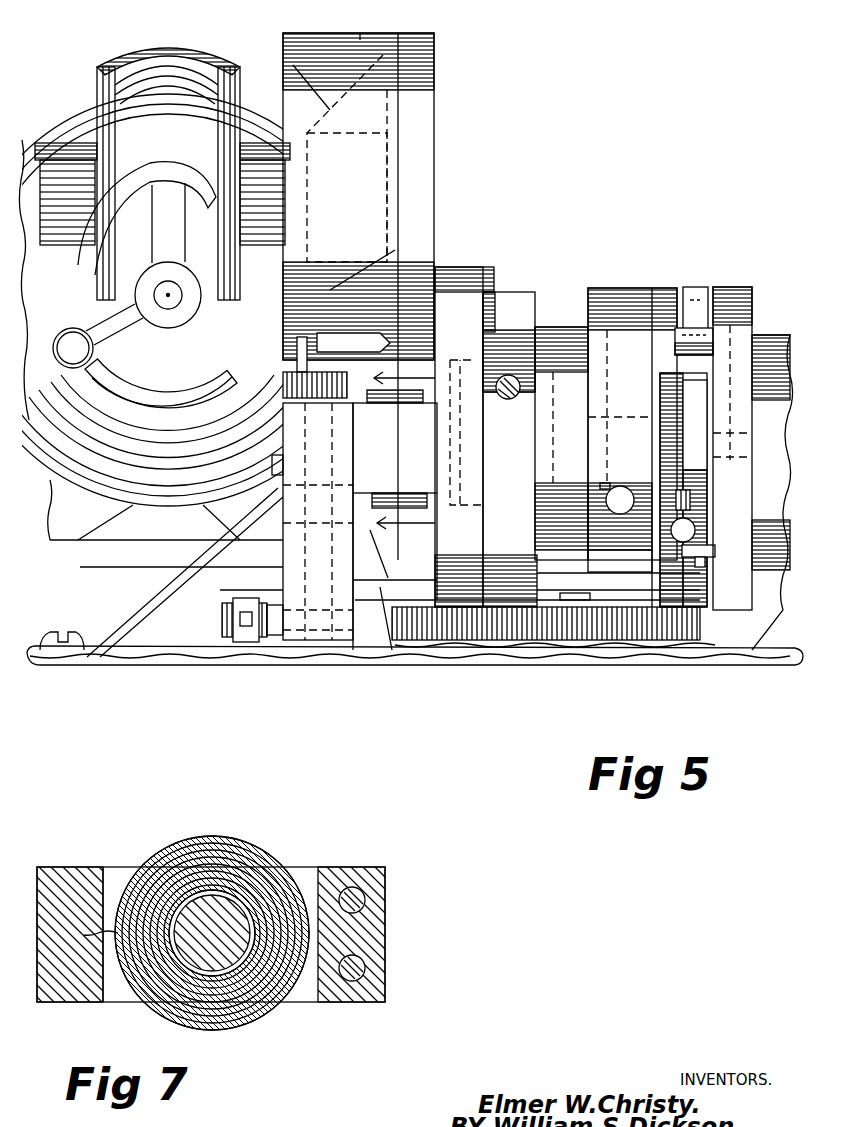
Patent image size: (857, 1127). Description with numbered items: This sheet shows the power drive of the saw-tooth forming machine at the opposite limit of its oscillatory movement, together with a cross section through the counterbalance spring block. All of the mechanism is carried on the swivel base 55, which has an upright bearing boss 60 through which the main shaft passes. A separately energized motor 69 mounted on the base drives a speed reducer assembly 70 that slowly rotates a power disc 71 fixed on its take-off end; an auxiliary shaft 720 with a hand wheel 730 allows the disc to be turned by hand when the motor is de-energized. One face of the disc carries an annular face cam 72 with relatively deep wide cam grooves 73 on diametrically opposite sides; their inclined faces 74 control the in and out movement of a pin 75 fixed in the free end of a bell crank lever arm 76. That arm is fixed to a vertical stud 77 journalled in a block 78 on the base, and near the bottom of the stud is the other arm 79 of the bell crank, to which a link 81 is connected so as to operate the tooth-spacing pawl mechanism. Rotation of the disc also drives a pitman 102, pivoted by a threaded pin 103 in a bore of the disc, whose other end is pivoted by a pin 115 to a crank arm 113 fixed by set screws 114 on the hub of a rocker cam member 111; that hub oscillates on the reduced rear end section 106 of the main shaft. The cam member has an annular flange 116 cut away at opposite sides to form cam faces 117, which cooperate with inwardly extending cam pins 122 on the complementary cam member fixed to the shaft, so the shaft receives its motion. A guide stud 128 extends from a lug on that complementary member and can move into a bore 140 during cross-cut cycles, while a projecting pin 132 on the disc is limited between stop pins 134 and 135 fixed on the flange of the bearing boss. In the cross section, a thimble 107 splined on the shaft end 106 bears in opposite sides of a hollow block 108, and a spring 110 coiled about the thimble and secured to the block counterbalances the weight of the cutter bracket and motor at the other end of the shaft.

In FIG. 5, the swivel base 55 is at (90, 662).
In FIG. 5, the upright bearing boss 60 is at (762, 568).
In FIG. 5, the motor 69 is at (60, 120).
In FIG. 5, the speed reducer assembly 70 is at (150, 105).
In FIG. 5, the power disc 71 is at (420, 165).
In FIG. 5, the annular face cam 72 is at (330, 290).
In FIG. 5, the cam grooves 73 is at (293, 65).
In FIG. 5, the inclined faces 74 is at (355, 38).
In FIG. 5, the pin 75 is at (300, 362).
In FIG. 5, the bell crank lever arm 76 is at (283, 398).
In FIG. 5, the vertical stud 77 is at (283, 585).
In FIG. 5, the block 78 is at (283, 548).
In FIG. 5, the arm 79 is at (222, 616).
In FIG. 5, the link 81 is at (233, 633).
In FIG. 5, the pitman 102 is at (452, 295).
In FIG. 5, the threaded pin 103 is at (515, 328).
In FIG. 7, the rear end section 106 is at (245, 895).
In FIG. 7, the thimble 107 is at (210, 895).
In FIG. 5, the hollow block 108 is at (412, 448).
In FIG. 7, the hollow block 108 is at (348, 867).
In FIG. 5, the spring 110 is at (380, 500).
In FIG. 5, the rocker cam member 111 is at (552, 325).
In FIG. 5, the crank arm 113 is at (518, 600).
In FIG. 5, the set screws 114 is at (510, 374).
In FIG. 5, the pin 115 is at (465, 607).
In FIG. 5, the annular flange 116 is at (580, 325).
In FIG. 5, the cam faces 117 is at (605, 512).
In FIG. 5, the cam pins 122 is at (620, 505).
In FIG. 5, the guide stud 128 is at (680, 287).
In FIG. 5, the projecting pin 132 is at (690, 500).
In FIG. 5, the stop pin 134 is at (695, 330).
In FIG. 5, the stop pin 135 is at (702, 562).
In FIG. 5, the bore 140 is at (752, 300).
In FIG. 5, the auxiliary shaft 720 is at (168, 297).
In FIG. 5, the hand wheel 730 is at (95, 392).